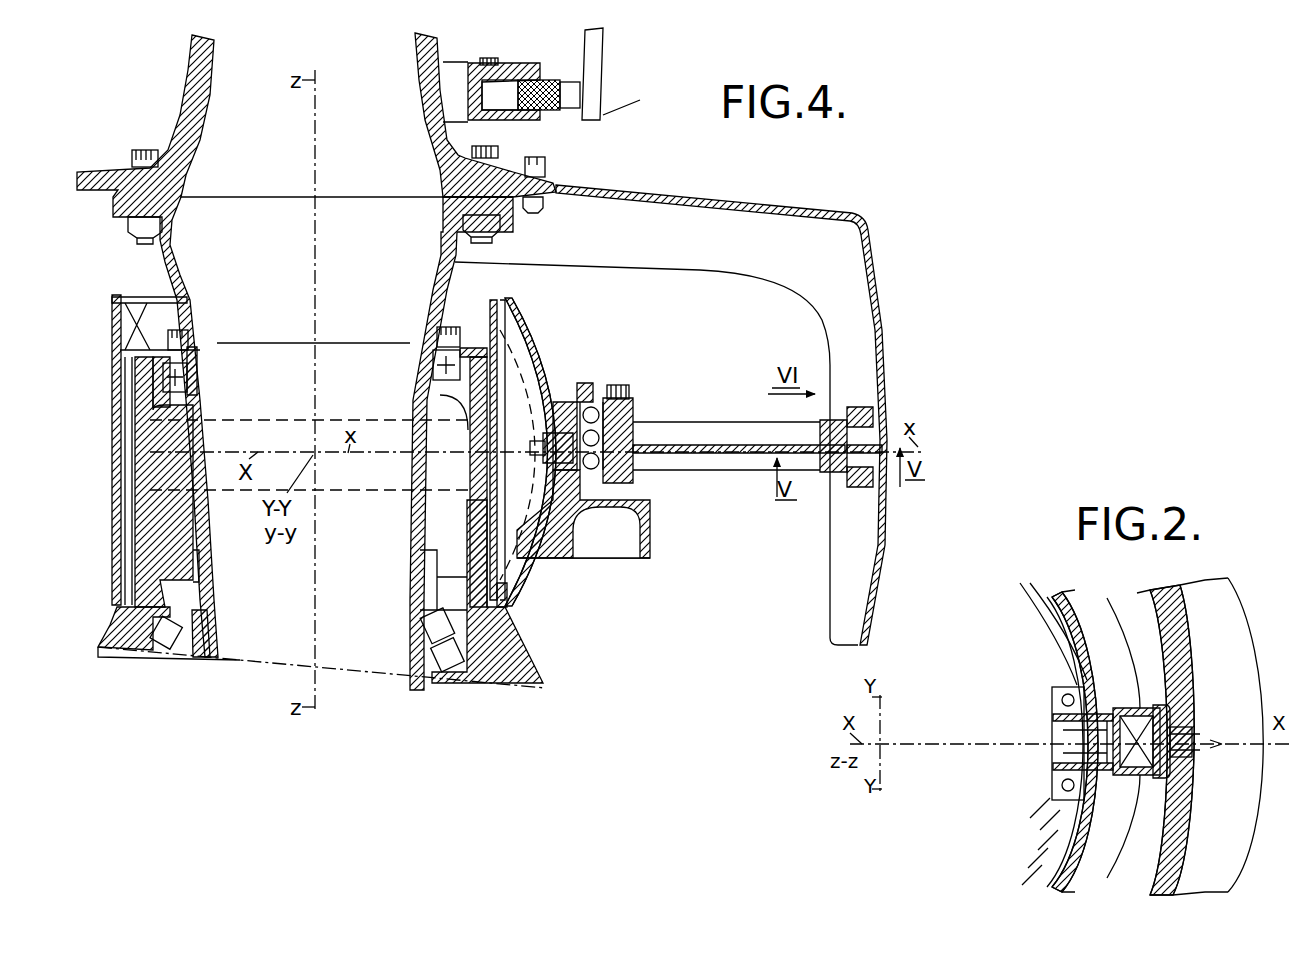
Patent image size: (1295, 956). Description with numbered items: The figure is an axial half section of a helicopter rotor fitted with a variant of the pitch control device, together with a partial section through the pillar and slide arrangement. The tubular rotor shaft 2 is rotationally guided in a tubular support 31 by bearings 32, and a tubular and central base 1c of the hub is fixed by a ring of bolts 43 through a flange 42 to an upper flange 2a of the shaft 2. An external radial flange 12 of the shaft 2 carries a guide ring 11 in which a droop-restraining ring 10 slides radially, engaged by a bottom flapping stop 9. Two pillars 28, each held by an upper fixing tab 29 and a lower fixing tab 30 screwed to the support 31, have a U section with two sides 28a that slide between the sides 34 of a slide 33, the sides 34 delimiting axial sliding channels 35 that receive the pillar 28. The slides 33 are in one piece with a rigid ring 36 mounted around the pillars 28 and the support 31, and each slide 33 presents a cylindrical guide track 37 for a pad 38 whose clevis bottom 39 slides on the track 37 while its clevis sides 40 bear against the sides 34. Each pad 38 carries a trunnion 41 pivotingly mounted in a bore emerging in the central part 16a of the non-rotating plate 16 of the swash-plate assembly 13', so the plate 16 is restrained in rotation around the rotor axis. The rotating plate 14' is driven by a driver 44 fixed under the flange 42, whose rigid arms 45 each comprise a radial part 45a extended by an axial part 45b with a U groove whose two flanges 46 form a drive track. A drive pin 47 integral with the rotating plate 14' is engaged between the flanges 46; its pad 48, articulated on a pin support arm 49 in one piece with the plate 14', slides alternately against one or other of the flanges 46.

In FIG. 4, the tubular and central base of the hub 1c is at (462, 180).
In FIG. 4, the rotor shaft 2 is at (432, 570).
In FIG. 4, the upper flange of the rotor shaft 2a is at (443, 206).
In FIG. 4, the bottom flapping stop 9 is at (592, 112).
In FIG. 4, the droop-restraining ring 10 is at (546, 80).
In FIG. 4, the guide ring 11 is at (527, 118).
In FIG. 4, the external radial flange of the shaft 12 is at (483, 60).
In FIG. 4, the swash-plate assembly 13' is at (609, 389).
In FIG. 4, the rotating plate 14' is at (711, 422).
In FIG. 4, the non-rotating plate 16 is at (606, 518).
In FIG. 4, the central part of the non-rotating plate 16a is at (645, 515).
In FIG. 2, the central part of the non-rotating plate 16a is at (1160, 612).
In FIG. 4, the pillar 28 is at (500, 302).
In FIG. 2, the pillar 28 is at (1112, 750).
In FIG. 2, the side of the pillar 28a is at (1053, 727).
In FIG. 4, the upper fixing tab 29 is at (138, 345).
In FIG. 2, the upper fixing tab 29 is at (1055, 703).
In FIG. 4, the lower fixing tab 30 is at (118, 589).
In FIG. 4, the tubular support 31 is at (432, 400).
In FIG. 2, the tubular support 31 is at (1057, 843).
In FIG. 4, the bearings 32 is at (412, 343).
In FIG. 4, the slide 33 is at (527, 345).
In FIG. 2, the slide 33 is at (1090, 705).
In FIG. 2, the sides of the slide 34 is at (1138, 708).
In FIG. 2, the axial sliding channel 35 is at (1136, 741).
In FIG. 4, the rigid ring 36 is at (176, 492).
In FIG. 2, the rigid ring 36 is at (1083, 862).
In FIG. 4, the guide track 37 is at (527, 533).
In FIG. 4, the pad 38 is at (534, 377).
In FIG. 2, the pad 38 is at (1175, 707).
In FIG. 4, the clevis bottom 39 is at (570, 540).
In FIG. 2, the clevis bottom 39 is at (1180, 765).
In FIG. 4, the clevis side 40 is at (420, 514).
In FIG. 2, the clevis side 40 is at (1167, 713).
In FIG. 4, the trunnion 41 is at (563, 402).
In FIG. 2, the trunnion 41 is at (1193, 750).
In FIG. 4, the flange 42 is at (533, 173).
In FIG. 4, the bolts 43 is at (470, 224).
In FIG. 4, the driver 44 is at (862, 218).
In FIG. 4, the rigid arm 45 is at (870, 250).
In FIG. 4, the radial part of the arm 45a is at (700, 207).
In FIG. 4, the axial part of the arm 45b is at (880, 568).
In FIG. 4, the flanges of the U groove 46 is at (855, 570).
In FIG. 4, the drive pin 47 is at (866, 407).
In FIG. 4, the pad 48 is at (868, 485).
In FIG. 4, the pin support arm 49 is at (742, 457).